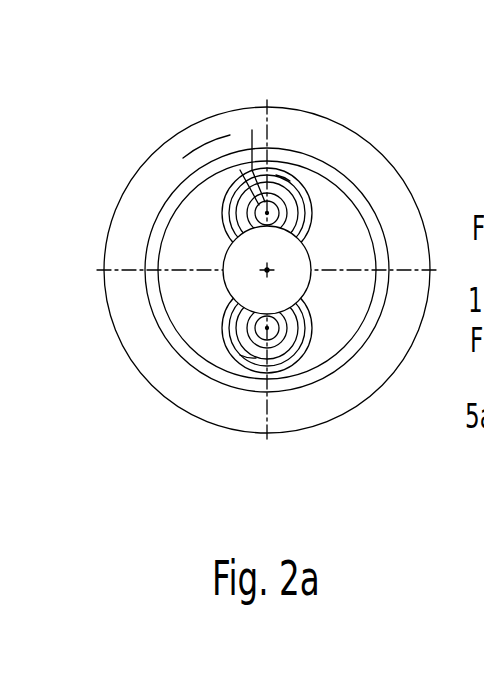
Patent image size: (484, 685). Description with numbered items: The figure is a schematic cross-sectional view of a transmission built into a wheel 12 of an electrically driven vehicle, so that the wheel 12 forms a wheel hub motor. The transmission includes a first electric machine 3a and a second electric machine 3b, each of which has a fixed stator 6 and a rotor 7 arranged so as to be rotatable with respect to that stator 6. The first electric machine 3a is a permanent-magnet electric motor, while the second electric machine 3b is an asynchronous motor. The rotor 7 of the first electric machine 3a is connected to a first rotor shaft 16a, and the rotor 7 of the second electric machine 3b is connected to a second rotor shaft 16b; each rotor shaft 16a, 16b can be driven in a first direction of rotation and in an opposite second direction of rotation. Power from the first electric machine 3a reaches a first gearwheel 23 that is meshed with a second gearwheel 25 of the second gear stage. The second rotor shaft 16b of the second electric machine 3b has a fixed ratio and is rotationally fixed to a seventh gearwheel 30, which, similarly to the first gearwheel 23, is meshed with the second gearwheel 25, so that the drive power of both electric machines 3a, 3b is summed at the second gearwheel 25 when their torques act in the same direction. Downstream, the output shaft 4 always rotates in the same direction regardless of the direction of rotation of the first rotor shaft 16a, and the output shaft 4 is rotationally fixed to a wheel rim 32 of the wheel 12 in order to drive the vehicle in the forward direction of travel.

The wheel 12 is at (353, 108).
The first electric machine 3a is at (210, 343).
The second electric machine 3b is at (210, 200).
The wheel rim 32 is at (210, 167).
The first rotor shaft 16a is at (255, 327).
The second rotor shaft 16b is at (272, 208).
The first gearwheel 23 is at (250, 353).
The second gearwheel 25 is at (222, 257).
The output shaft 4 is at (269, 272).
The seventh gearwheel 30 is at (252, 130).
The stator 6 is at (240, 170).
The rotor 7 is at (284, 173).